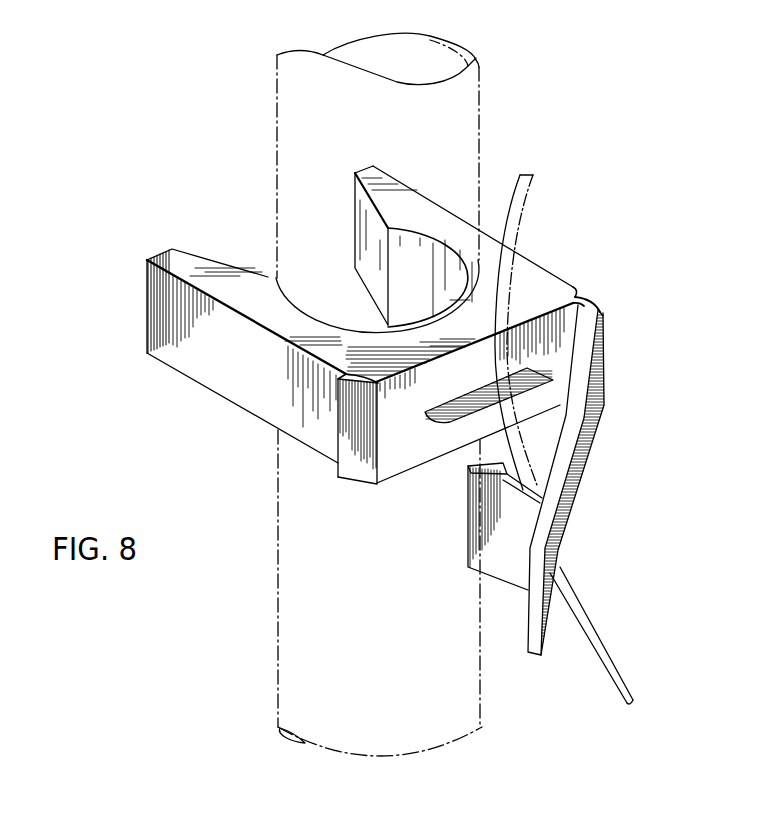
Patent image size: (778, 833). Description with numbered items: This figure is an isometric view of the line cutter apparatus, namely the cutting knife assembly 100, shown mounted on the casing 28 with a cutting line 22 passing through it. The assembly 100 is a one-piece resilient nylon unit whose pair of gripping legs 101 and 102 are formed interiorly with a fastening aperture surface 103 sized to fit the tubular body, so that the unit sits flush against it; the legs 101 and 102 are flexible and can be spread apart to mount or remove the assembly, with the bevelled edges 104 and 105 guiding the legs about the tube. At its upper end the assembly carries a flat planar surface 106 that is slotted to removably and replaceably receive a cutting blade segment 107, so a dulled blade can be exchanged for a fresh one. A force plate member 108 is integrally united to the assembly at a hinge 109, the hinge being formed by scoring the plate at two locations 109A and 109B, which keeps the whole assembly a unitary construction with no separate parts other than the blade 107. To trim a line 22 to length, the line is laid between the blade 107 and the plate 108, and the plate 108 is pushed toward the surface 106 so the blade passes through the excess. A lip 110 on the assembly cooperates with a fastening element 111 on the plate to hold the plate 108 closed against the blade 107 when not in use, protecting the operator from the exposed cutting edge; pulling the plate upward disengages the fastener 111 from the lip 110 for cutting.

The casing 28 is at (478, 88).
The cutting line 22 is at (532, 195).
The cutting knife assembly 100 is at (117, 287).
The gripping leg 101 is at (207, 357).
The gripping leg 102 is at (440, 207).
The fastening aperture surface 103 is at (303, 318).
The bevelled edge 104 is at (203, 257).
The bevelled edge 105 is at (360, 200).
The flat planar surface 106 is at (377, 480).
The replaceable cutting blade segment 107 is at (463, 422).
The force plate member 108 is at (567, 507).
The hinge 109 is at (600, 304).
The scoring location 109A is at (578, 294).
The scoring location 109B is at (604, 322).
The lip 110 is at (337, 427).
The fastening element 111 is at (507, 470).